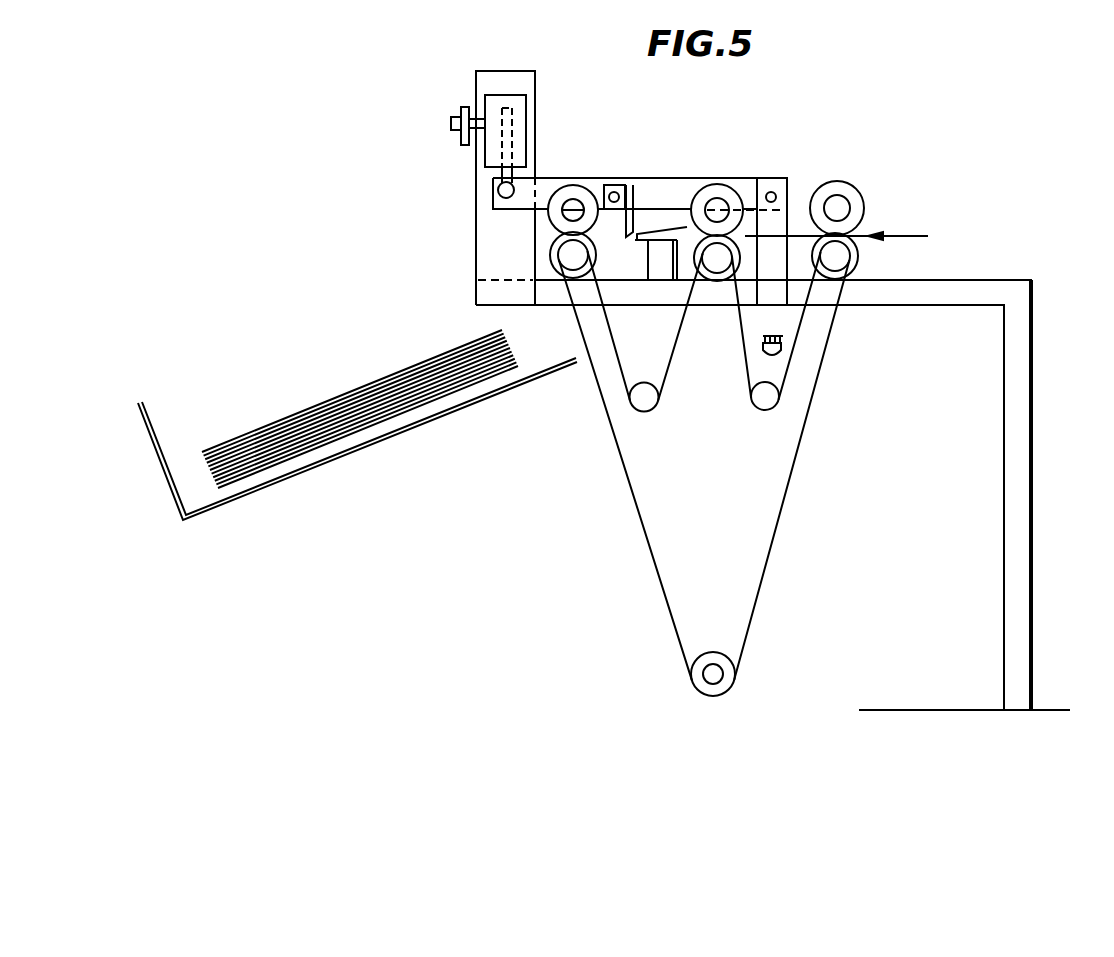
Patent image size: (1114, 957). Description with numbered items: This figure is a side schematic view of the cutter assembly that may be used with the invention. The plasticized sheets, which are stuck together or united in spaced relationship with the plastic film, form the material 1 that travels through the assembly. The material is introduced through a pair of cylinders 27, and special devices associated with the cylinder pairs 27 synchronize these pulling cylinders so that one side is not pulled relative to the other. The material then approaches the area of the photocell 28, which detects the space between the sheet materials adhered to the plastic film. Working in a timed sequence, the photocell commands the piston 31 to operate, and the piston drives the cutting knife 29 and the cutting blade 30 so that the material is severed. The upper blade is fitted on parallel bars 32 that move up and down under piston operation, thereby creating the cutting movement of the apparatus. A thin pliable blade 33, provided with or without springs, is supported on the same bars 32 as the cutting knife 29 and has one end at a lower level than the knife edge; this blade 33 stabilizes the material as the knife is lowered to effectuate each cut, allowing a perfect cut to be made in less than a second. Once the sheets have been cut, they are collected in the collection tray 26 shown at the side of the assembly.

The sheet / document 1 is at (900, 230).
The collection tray 26 is at (348, 455).
The cylinders 27 is at (550, 247).
The photocell 28 is at (790, 323).
The cutting knife 29 is at (648, 160).
The cutting blade 30 is at (656, 253).
The piston 31 is at (485, 153).
The parallel bars 32 is at (582, 158).
The thin pliable blade 33 is at (660, 233).